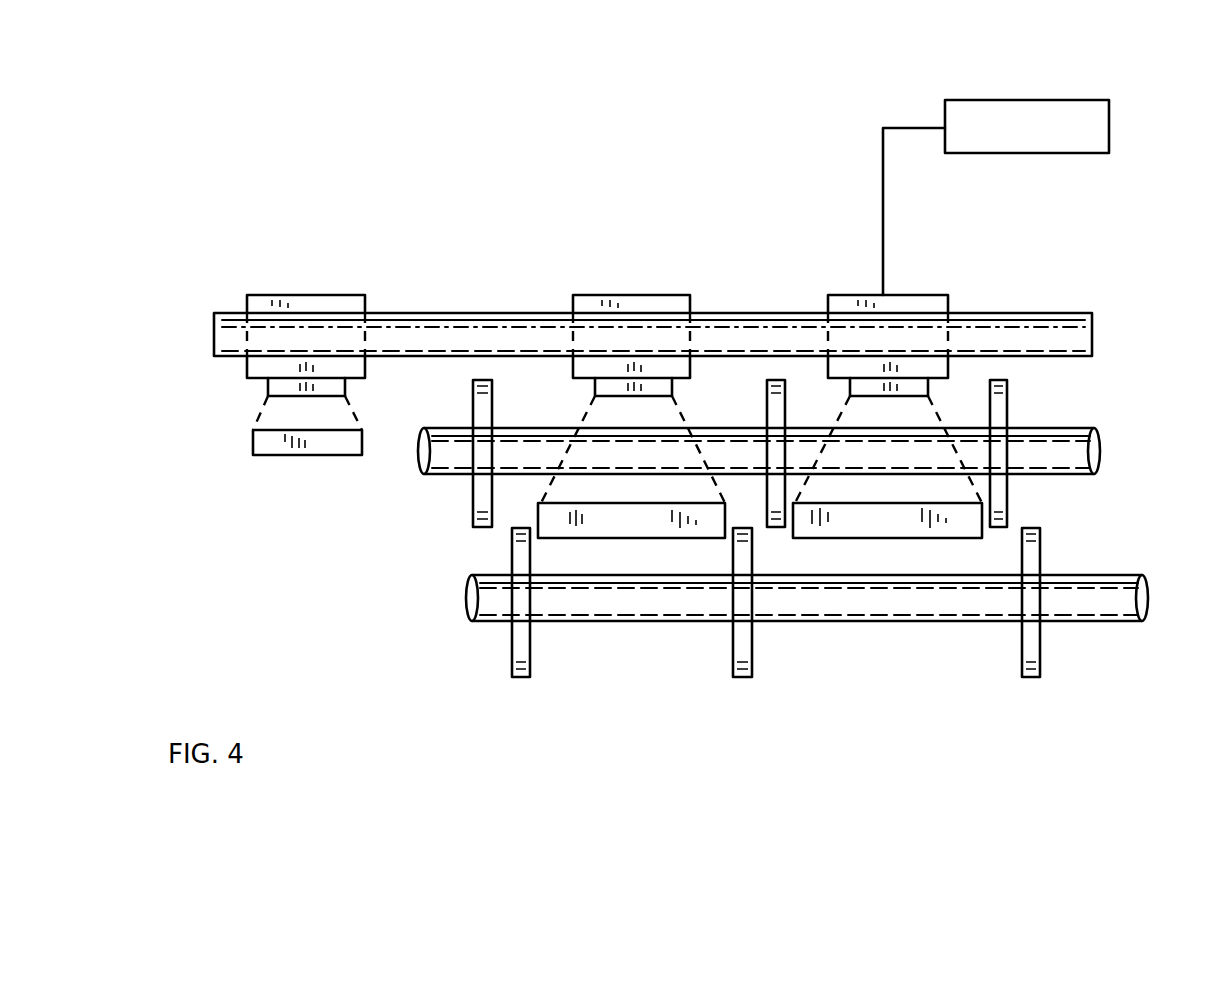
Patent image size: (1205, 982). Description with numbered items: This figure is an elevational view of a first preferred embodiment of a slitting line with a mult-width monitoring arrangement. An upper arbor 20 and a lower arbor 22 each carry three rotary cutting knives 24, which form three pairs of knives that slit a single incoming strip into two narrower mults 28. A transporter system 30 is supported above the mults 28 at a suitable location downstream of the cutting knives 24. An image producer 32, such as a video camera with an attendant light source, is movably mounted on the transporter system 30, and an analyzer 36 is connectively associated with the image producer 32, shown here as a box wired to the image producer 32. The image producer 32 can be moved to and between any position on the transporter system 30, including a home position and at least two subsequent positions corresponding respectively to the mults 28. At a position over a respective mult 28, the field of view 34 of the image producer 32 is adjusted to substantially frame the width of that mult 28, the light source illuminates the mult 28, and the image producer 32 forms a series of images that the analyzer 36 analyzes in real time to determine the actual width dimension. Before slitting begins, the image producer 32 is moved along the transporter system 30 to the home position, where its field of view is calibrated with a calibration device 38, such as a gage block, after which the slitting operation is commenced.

The upper arbor 20 is at (442, 470).
The lower arbor 22 is at (500, 615).
The rotary cutting knives 24 is at (482, 410).
The mults 28 is at (580, 527).
The transporter system 30 is at (732, 327).
The image producer 32 is at (333, 307).
The field of view 34 is at (655, 425).
The analyzer 36 is at (1109, 107).
The calibration device 38 is at (277, 443).